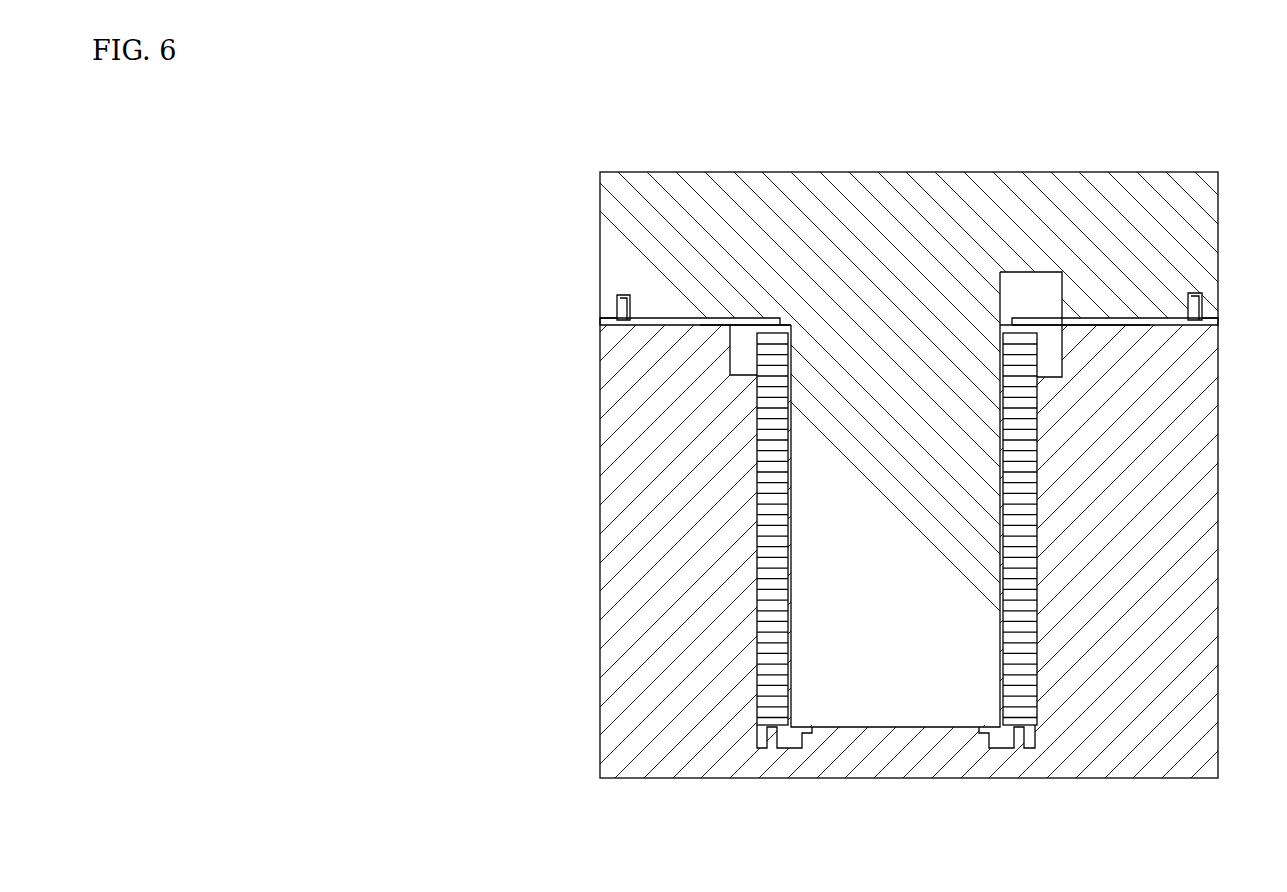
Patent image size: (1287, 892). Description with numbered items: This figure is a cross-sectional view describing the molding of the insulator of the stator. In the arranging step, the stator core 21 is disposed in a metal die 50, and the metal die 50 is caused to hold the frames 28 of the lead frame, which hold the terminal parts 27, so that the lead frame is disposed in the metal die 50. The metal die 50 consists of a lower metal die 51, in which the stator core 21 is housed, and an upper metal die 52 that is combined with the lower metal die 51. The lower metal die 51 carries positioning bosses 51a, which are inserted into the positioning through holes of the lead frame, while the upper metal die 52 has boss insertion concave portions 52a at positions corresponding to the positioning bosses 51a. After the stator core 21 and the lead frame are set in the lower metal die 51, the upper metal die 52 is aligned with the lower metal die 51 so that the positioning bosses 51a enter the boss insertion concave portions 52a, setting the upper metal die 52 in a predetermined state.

The metal die 50 is at (462, 238).
The lower metal die 51 is at (628, 481).
The upper metal die 52 is at (603, 266).
The positioning boss 51a is at (619, 300).
The boss insertion concave portion 52a is at (629, 296).
The frame 28 is at (598, 312).
The terminal part 27 is at (686, 333).
The stator core 21 is at (1023, 537).